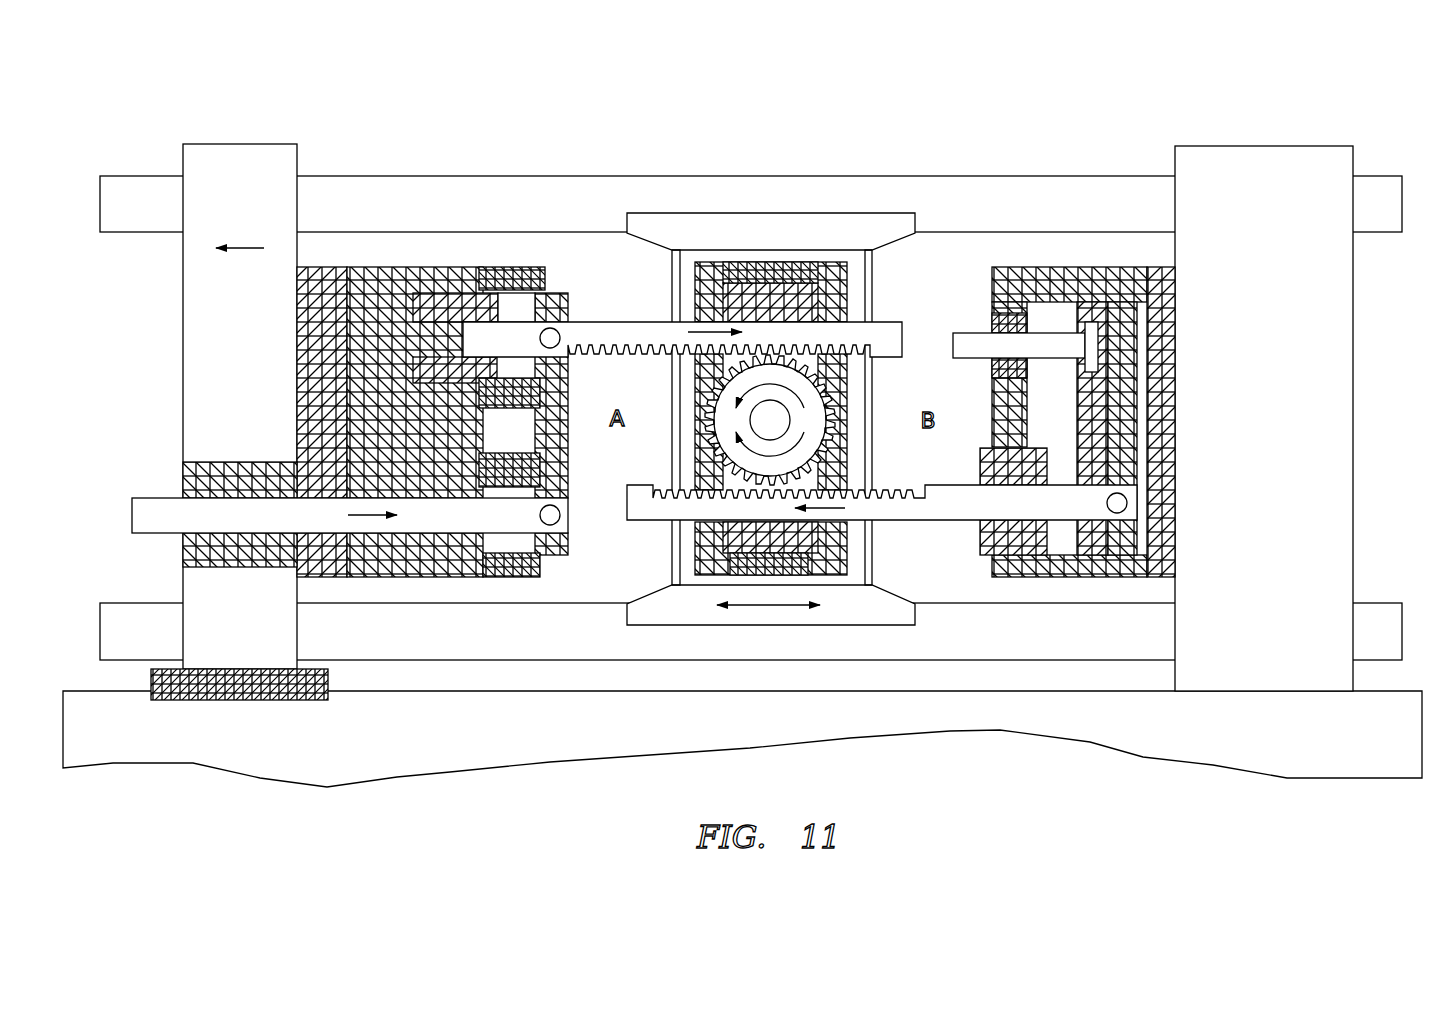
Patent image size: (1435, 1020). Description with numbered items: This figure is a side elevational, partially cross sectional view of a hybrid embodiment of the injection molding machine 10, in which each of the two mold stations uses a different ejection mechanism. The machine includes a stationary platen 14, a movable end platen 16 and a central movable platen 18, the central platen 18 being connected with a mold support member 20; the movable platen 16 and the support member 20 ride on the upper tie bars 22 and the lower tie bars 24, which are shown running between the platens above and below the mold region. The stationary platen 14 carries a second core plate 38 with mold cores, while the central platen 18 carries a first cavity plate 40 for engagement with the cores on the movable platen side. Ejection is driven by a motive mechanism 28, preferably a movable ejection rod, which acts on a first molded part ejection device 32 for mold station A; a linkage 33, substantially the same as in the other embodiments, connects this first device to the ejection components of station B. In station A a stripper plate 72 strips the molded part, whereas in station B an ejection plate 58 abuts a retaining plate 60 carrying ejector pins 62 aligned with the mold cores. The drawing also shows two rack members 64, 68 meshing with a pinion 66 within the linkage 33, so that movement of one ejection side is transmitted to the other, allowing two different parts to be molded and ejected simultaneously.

The molding machine 10 is at (714, 118).
The stationary platen 14 is at (1205, 155).
The movable platen 16 is at (236, 153).
The central movable platen 18 is at (764, 280).
The mold support member 20 is at (893, 616).
The upper tie bars 22 is at (123, 183).
The lower tie bars 24 is at (116, 606).
The motive mechanism 28 is at (146, 504).
The first molded part ejection device 32 is at (610, 533).
The linkage 33 is at (628, 453).
The second core plate 38 is at (1000, 279).
The first cavity plate 40 is at (497, 278).
The ejection plate 58 is at (1127, 544).
The retaining plate 60 is at (1093, 550).
The ejector pins 62 is at (965, 345).
The upper rack 64 is at (617, 330).
The pinion gear 66 is at (834, 437).
The lower rack 68 is at (960, 514).
The stripper plate 72 is at (562, 283).